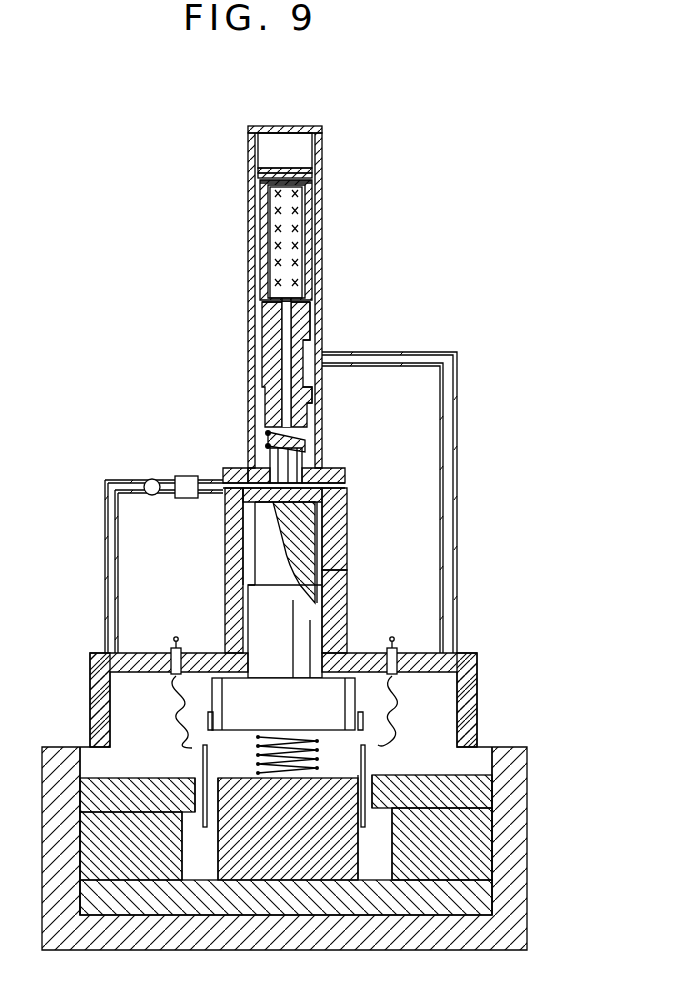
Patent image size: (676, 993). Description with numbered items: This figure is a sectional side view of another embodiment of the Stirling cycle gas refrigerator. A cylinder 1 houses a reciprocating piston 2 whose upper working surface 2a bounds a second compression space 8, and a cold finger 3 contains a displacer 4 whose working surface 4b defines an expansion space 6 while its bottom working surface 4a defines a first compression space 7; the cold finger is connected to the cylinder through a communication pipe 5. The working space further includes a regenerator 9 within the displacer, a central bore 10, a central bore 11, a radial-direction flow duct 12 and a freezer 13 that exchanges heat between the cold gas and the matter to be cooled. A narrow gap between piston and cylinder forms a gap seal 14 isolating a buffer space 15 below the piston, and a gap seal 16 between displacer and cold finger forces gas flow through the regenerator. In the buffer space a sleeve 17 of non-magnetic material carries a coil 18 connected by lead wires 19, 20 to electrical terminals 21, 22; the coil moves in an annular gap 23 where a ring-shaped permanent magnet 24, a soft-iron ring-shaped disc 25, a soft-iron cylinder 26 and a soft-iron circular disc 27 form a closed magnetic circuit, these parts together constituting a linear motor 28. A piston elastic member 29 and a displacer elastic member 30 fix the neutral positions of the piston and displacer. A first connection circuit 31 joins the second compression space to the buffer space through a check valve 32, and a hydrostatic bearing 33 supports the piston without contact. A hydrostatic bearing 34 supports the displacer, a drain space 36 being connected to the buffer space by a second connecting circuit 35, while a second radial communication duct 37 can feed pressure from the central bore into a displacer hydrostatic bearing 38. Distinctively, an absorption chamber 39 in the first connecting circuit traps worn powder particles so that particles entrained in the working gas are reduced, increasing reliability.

The cylinder 1 is at (240, 562).
The piston 2 is at (322, 624).
The upper working surface 2a is at (262, 512).
The cold finger 3 is at (318, 212).
The displacer 4 is at (306, 252).
The bottom working surface 4a is at (310, 441).
The working surface 4b is at (300, 168).
The communication pipe 5 is at (260, 470).
The expansion space 6 is at (306, 137).
The first compression space 7 is at (265, 437).
The second compression space 8 is at (305, 493).
The regenerator 9 is at (264, 240).
The central bore 10 is at (287, 402).
The central bore 11 is at (268, 188).
The radial-direction flow duct 12 is at (258, 178).
The freezer 13 is at (252, 150).
The gap seal 14 is at (326, 588).
The buffer space 15 is at (460, 706).
The gap seal 16 is at (312, 292).
The sleeve 17 is at (205, 744).
The coil 18 is at (200, 766).
The lead wire 19 is at (170, 700).
The lead wire 20 is at (396, 696).
The electrical terminal 21 is at (172, 636).
The electrical terminal 22 is at (392, 636).
The annular gap 23 is at (366, 775).
The ring-shaped permanent magnet 24 is at (454, 885).
The soft-iron ring-shaped disc 25 is at (446, 777).
The soft-iron cylinder 26 is at (338, 850).
The soft-iron circular disc 27 is at (396, 908).
The linear motor 28 is at (205, 822).
The piston elastic member 29 is at (318, 738).
The displacer elastic member 30 is at (310, 450).
The first connection circuit 31 is at (112, 562).
The check valve 32 is at (150, 479).
The hydrostatic bearing 33 is at (328, 549).
The hydrostatic bearing 34 is at (311, 414).
The second connecting circuit 35 is at (458, 442).
The drain space 36 is at (262, 372).
The second radial communication duct 37 is at (265, 313).
The displacer hydrostatic bearing 38 is at (310, 324).
The absorption chamber 39 is at (186, 476).